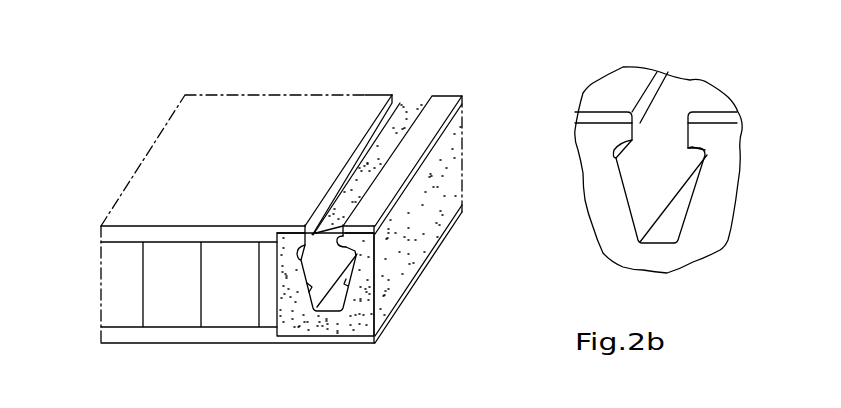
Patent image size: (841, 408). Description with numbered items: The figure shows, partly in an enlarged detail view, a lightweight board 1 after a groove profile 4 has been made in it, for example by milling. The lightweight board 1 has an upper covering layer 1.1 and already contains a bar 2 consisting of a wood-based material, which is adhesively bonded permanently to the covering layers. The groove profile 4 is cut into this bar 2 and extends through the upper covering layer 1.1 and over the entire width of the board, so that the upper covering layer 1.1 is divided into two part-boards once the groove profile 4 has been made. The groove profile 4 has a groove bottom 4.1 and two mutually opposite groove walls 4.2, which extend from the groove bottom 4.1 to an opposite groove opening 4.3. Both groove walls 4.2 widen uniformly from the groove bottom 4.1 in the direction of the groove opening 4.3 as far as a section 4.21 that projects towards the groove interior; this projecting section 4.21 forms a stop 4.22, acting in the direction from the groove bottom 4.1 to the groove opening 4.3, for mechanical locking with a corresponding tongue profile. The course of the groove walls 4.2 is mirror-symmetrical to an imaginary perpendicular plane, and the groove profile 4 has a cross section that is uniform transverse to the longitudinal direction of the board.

The lightweight board 1 is at (96, 148).
The upper covering layer 1.1 is at (303, 105).
The bar 2 is at (733, 142).
The groove profile 4 is at (413, 90).
The groove bottom 4.1 is at (327, 305).
The groove walls 4.2 is at (345, 283).
The section projecting towards the groove interior 4.21 is at (343, 242).
The stop 4.22 is at (297, 263).
The groove opening 4.3 is at (362, 193).